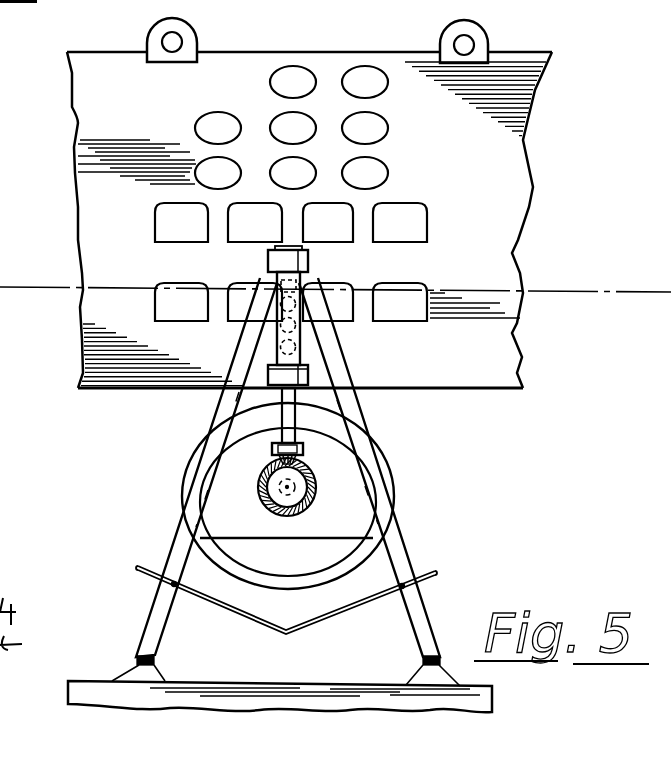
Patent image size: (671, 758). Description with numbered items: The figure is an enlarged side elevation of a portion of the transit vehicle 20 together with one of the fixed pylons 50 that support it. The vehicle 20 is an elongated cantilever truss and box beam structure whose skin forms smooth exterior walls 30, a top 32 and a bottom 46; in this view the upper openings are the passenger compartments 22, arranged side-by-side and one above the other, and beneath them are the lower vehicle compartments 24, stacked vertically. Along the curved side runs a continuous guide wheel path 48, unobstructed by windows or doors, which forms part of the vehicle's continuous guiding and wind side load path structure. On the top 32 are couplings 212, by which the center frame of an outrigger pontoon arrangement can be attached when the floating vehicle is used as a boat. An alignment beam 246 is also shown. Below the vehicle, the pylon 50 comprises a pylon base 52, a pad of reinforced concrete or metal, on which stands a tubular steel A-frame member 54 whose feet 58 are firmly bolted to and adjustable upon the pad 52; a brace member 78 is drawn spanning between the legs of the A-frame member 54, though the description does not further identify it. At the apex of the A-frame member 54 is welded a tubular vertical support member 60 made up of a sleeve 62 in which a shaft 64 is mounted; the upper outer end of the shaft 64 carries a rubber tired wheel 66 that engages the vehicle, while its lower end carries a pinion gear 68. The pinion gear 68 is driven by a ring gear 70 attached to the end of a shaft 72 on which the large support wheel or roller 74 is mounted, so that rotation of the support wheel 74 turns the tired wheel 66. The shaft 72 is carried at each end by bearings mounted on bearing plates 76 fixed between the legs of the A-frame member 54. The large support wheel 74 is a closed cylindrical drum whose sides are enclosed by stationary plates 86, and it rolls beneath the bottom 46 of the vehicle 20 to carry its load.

The transit vehicle 20 is at (511, 54).
The passenger compartments 22 is at (389, 85).
The vehicle compartments 24 is at (419, 229).
The exterior walls 30 is at (148, 118).
The top 32 is at (421, 30).
The couplings 212 is at (196, 28).
The bottom 46 is at (480, 390).
The guide wheel paths 48 is at (173, 260).
The pylons 50 is at (153, 610).
The pylon base 52 is at (240, 645).
The A-frame member 54 is at (402, 552).
The foot 58 is at (415, 677).
The tubular vertical support member 60 is at (335, 310).
The sleeve 62 is at (301, 284).
The shaft 64 is at (345, 402).
The rubber tired wheel 66 is at (267, 265).
The pinion gear 68 is at (299, 463).
The ring gear 70 is at (268, 512).
The shaft 72 is at (264, 473).
The large support wheel 74 is at (386, 436).
The bearing plates 76 is at (258, 500).
The brace bar 78 is at (181, 532).
The stationary plates 86 is at (250, 428).
The alignment beam 246 is at (50, 266).